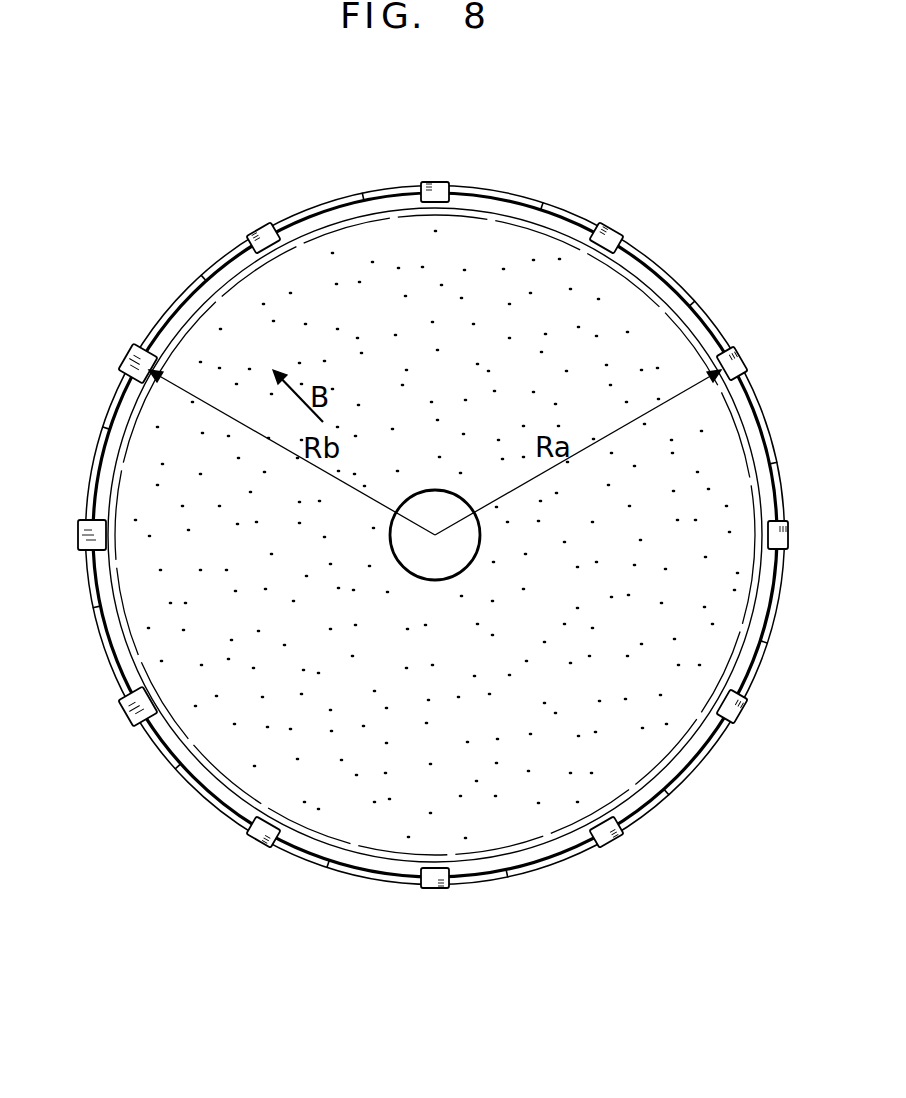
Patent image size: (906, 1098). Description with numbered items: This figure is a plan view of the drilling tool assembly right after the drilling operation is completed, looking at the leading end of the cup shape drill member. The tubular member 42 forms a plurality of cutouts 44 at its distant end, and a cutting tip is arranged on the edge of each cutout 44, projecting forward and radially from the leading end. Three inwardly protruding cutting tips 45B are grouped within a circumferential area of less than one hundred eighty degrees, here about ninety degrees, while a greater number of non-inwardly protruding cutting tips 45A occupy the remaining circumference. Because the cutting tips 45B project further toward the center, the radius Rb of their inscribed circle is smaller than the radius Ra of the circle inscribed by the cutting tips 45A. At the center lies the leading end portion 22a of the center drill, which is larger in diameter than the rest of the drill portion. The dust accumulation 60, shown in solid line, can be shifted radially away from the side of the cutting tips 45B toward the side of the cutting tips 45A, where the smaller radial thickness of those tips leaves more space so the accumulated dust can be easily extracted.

The dust accumulation 60 is at (147, 603).
The tubular member 42 is at (297, 216).
The cutouts 44 is at (571, 211).
The cutting tips 45A is at (432, 181).
The cutting tips 45B is at (83, 522).
The leading end portion 22a is at (445, 568).